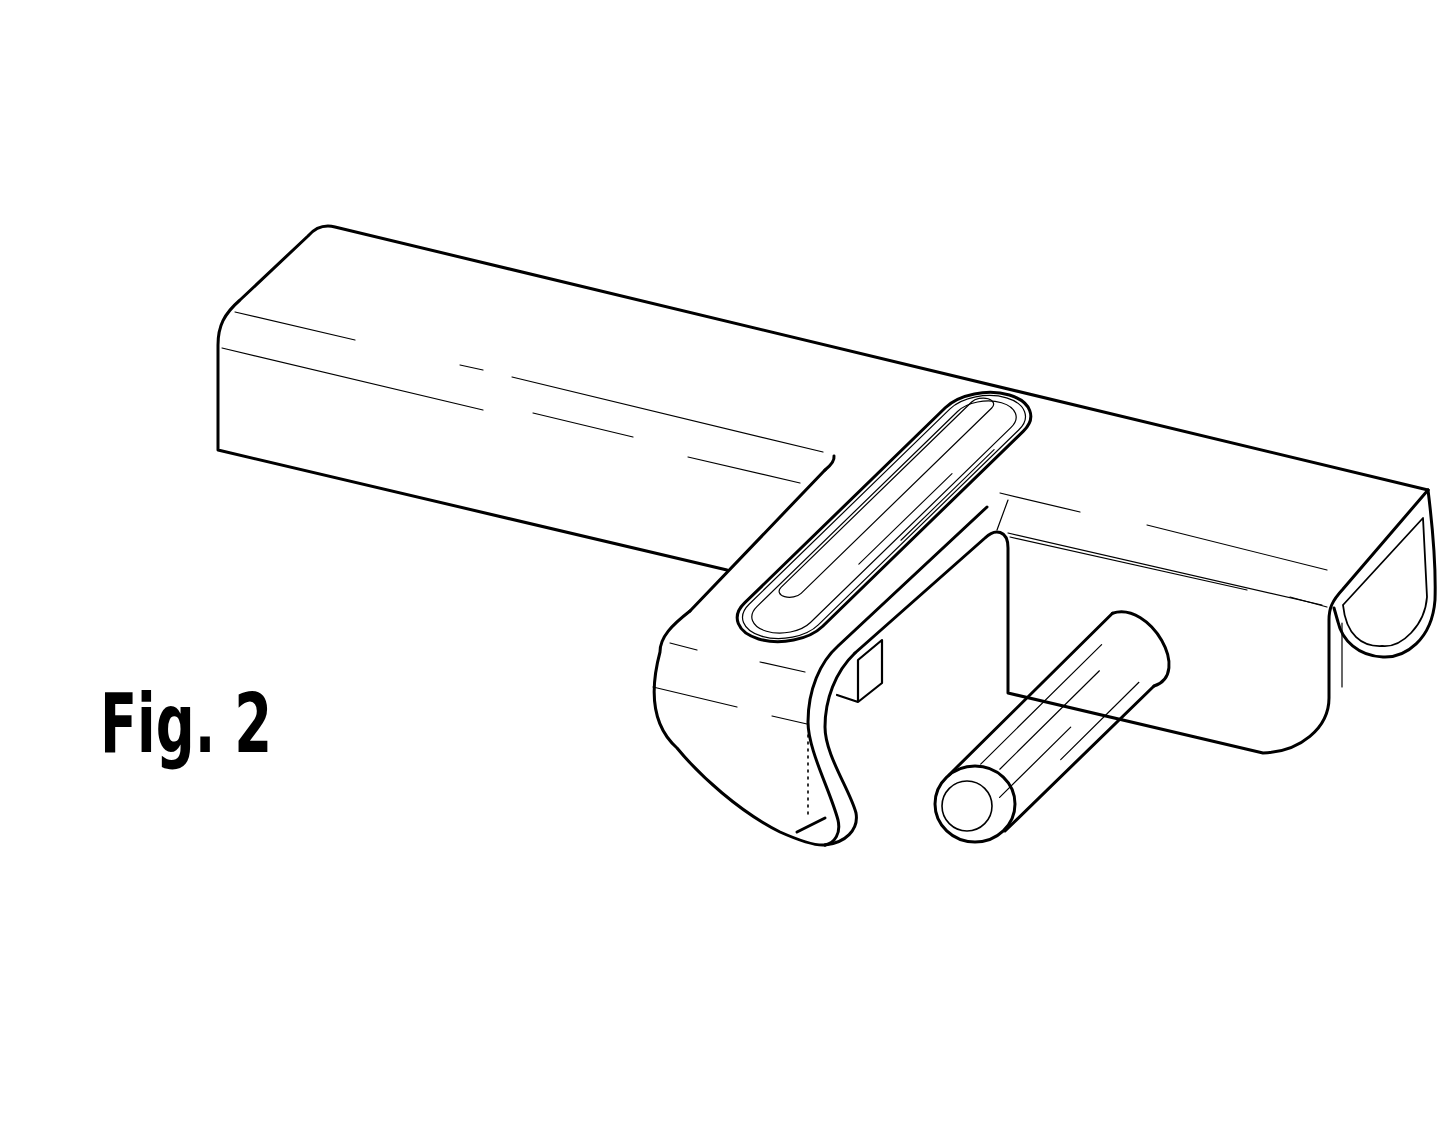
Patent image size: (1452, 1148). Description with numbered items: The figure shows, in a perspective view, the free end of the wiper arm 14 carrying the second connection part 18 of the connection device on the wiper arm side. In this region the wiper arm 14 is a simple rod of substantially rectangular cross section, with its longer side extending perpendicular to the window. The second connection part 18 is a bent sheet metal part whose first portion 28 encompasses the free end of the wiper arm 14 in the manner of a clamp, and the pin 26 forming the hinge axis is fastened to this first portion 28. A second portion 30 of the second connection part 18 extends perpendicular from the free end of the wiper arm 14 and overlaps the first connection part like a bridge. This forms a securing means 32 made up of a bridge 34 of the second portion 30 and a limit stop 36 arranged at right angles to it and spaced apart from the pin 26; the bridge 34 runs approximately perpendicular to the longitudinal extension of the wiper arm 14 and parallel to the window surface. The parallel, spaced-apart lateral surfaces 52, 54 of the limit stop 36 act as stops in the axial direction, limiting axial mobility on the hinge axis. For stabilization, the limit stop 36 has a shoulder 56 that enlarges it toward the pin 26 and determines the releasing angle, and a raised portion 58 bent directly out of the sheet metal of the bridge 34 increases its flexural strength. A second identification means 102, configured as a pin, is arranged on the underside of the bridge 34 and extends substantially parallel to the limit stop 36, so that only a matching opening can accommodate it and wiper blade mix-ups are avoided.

The wiper arm 14 is at (428, 283).
The second connection part 18 is at (1050, 228).
The pin 26 is at (1063, 725).
The first portion 28 is at (1199, 378).
The second portion 30 is at (618, 613).
The securing means 32 is at (584, 739).
The bridge 34 is at (810, 523).
The limit stop 36 is at (733, 743).
The lateral surface 52 is at (842, 748).
The lateral surface 54 is at (703, 745).
The shoulder 56 is at (818, 821).
The raised portion 58 is at (975, 437).
The second identification means 102 is at (865, 676).